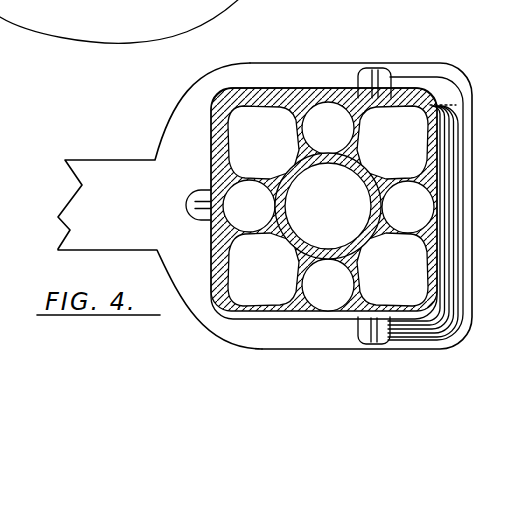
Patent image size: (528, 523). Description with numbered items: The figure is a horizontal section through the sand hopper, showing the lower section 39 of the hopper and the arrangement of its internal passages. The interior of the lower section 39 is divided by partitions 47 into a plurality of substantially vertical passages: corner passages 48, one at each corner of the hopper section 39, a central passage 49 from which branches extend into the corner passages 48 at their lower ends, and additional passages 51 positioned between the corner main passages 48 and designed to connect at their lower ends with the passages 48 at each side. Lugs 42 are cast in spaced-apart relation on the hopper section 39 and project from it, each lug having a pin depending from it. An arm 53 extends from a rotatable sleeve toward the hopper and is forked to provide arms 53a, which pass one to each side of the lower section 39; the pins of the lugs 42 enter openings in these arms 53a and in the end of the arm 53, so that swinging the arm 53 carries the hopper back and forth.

The lower section of sand hopper 39 is at (448, 207).
The lugs 42 is at (375, 67).
The partitions 47 is at (364, 171).
The vertical passages 48 is at (328, 206).
The central passage 49 is at (328, 206).
The additional passages 51 is at (328, 206).
The arm 53 is at (104, 167).
The forked arms 53a is at (305, 70).